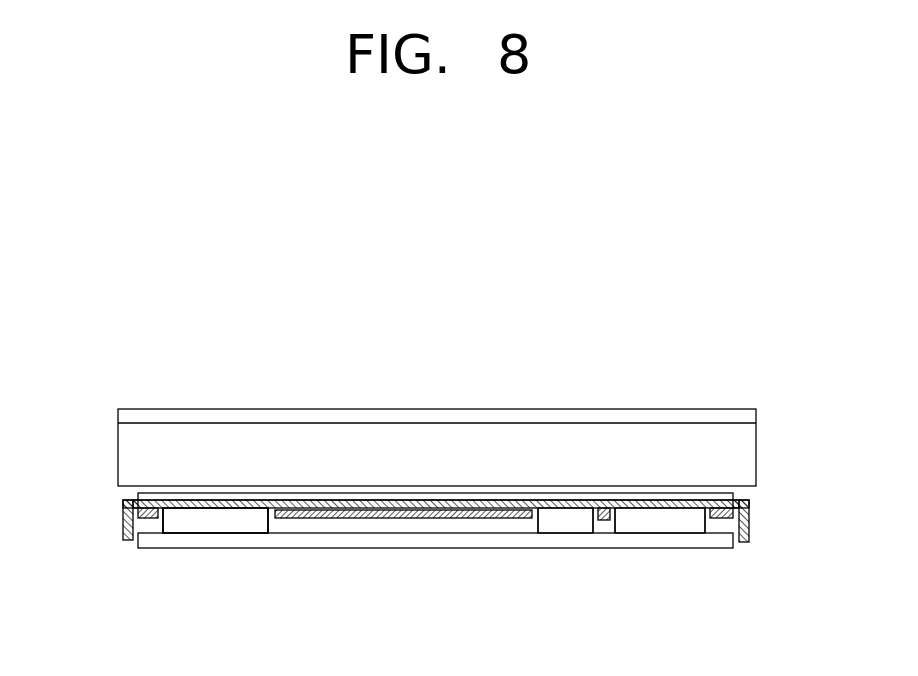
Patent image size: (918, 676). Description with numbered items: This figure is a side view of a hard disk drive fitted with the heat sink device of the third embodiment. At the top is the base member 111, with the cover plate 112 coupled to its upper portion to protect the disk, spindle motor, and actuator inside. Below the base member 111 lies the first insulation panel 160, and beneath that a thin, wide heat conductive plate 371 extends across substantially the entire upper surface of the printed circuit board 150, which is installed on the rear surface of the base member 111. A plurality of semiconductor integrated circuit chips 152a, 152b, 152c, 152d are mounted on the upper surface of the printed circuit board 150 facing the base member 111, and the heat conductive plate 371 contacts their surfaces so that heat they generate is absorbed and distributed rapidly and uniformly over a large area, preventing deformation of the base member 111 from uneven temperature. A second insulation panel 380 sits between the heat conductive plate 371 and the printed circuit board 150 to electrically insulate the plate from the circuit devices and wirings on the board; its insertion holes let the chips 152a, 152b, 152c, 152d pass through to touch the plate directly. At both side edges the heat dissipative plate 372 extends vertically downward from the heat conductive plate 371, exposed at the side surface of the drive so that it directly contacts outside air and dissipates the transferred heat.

The base member 111 is at (740, 455).
The cover plate 112 is at (740, 417).
The first insulation panel 160 is at (718, 495).
The heat conductive plate 371 is at (692, 512).
The heat dissipative plate 372 is at (124, 520).
The second insulation panel 380 is at (432, 518).
The printed circuit board 150 is at (343, 538).
The semiconductor integrated circuit chip 152a is at (218, 520).
The semiconductor integrated circuit chip 152b is at (215, 520).
The semiconductor integrated circuit chip 152c is at (658, 520).
The semiconductor integrated circuit chip 152d is at (563, 520).